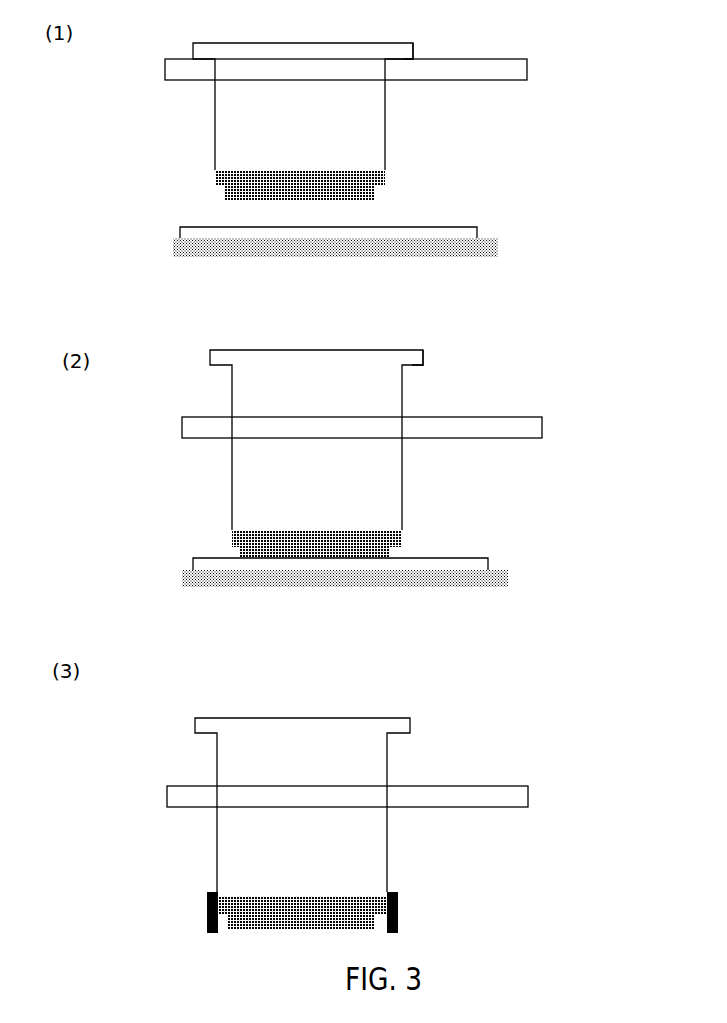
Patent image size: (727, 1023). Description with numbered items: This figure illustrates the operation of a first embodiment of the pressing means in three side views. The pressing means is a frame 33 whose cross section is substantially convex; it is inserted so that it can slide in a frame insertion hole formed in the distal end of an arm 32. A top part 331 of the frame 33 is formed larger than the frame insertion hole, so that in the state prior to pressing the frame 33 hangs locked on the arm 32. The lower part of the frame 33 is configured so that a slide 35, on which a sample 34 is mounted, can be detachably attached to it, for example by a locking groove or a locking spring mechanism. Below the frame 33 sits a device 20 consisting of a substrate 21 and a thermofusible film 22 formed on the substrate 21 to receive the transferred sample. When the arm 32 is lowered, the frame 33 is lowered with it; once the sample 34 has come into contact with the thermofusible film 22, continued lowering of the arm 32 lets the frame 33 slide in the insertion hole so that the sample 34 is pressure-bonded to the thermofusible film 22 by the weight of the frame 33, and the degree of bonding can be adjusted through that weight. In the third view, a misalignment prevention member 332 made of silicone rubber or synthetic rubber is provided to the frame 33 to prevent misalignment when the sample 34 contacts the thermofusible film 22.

The device 20 is at (566, 211).
The substrate 21 is at (501, 246).
The thermofusible film 22 is at (468, 226).
The arm 32 is at (497, 57).
The frame 33 is at (286, 43).
The top part 331 is at (407, 52).
The misalignment prevention member 332 is at (206, 918).
The sample 34 is at (377, 192).
The slide 35 is at (389, 177).